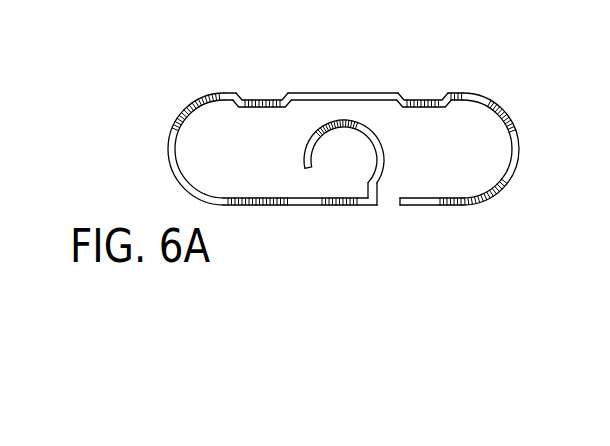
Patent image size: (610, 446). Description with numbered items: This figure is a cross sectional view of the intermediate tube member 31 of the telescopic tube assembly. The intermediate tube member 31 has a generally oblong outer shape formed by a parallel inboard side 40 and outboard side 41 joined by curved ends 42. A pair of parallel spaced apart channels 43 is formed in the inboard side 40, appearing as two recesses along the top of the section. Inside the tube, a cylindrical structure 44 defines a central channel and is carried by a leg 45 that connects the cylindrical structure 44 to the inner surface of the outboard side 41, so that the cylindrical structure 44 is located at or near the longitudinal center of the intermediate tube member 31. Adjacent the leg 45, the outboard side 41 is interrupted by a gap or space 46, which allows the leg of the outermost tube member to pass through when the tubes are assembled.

The intermediate tube member 31 is at (483, 74).
The inboard side 40 is at (368, 91).
The outboard side 41 is at (322, 206).
The curved ends 42 is at (171, 163).
The channels 43 is at (264, 84).
The cylindrical structure 44 is at (384, 139).
The leg 45 is at (385, 194).
The gap or space 46 is at (383, 214).